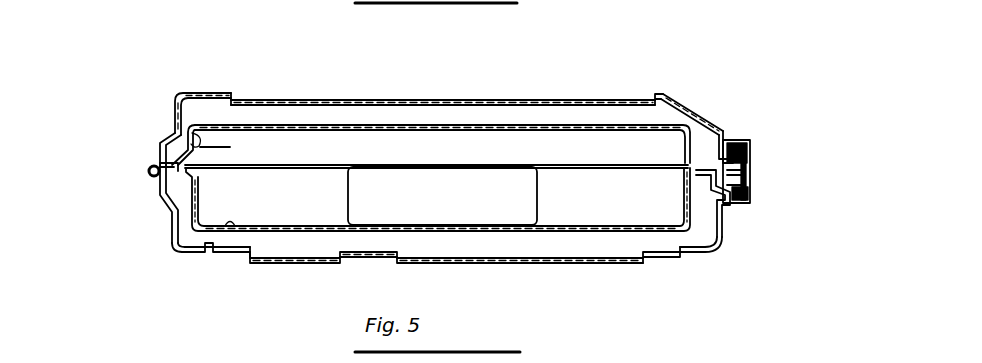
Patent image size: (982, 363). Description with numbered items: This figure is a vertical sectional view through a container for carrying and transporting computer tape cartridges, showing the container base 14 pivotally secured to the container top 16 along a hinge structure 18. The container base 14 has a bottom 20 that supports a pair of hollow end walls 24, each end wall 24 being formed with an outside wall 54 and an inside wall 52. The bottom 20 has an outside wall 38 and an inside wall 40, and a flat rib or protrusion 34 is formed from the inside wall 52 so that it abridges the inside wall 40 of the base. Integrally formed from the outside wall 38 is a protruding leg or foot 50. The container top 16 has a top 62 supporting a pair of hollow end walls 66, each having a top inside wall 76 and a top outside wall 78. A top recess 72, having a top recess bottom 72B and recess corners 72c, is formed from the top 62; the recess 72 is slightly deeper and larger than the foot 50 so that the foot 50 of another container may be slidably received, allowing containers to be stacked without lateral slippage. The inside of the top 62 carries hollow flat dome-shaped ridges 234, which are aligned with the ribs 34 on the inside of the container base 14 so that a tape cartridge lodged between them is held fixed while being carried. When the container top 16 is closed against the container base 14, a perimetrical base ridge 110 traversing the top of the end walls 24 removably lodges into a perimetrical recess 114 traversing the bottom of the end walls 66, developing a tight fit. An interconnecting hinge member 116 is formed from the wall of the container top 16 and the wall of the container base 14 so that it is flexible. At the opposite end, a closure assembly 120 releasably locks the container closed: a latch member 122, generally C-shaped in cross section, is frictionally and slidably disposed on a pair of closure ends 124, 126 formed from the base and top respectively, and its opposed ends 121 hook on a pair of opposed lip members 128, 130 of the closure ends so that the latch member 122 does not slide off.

The container base 14 is at (140, 257).
The container top 16 is at (175, 76).
The hinge structure 18 is at (122, 192).
The bottom 20 is at (275, 283).
The end wall 24 is at (161, 269).
The flat rib or protrusion 34 is at (200, 200).
The outside wall 38 is at (600, 265).
The inside wall 40 is at (230, 222).
The protruding leg or foot 50 is at (645, 265).
The inside wall 52 is at (197, 173).
The outside wall 54 is at (173, 225).
The top 62 is at (213, 92).
The hollow end wall 66 is at (164, 95).
The top recess 72 is at (522, 100).
The top recess bottom 72B is at (623, 100).
The recess corner 72c is at (230, 98).
The top inside wall 76 is at (190, 120).
The top outside wall 78 is at (173, 113).
The perimetrical base ridge 110 is at (157, 197).
The perimetrical recess 114 is at (160, 147).
The hinge member 116 is at (147, 175).
The closure assembly 120 is at (777, 137).
The opposed end 121 is at (745, 147).
The latch member 122 is at (750, 175).
The closure end 124 is at (750, 197).
The closure end 126 is at (760, 160).
The lip member 128 is at (750, 183).
The lip member 130 is at (787, 127).
The hollow flat dome-shaped ridge 234 is at (227, 152).